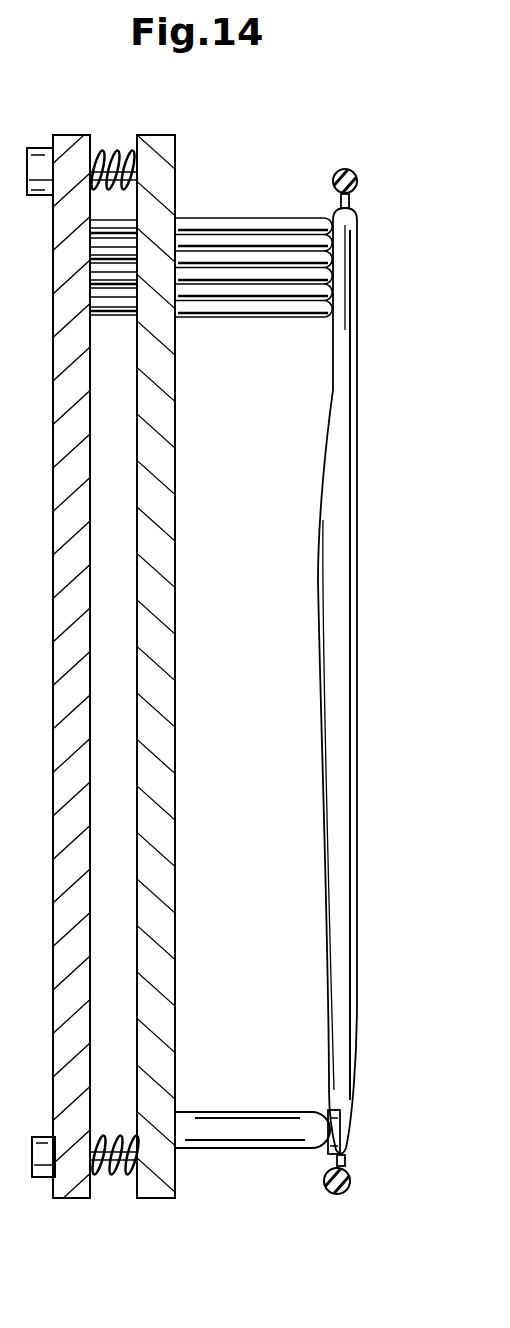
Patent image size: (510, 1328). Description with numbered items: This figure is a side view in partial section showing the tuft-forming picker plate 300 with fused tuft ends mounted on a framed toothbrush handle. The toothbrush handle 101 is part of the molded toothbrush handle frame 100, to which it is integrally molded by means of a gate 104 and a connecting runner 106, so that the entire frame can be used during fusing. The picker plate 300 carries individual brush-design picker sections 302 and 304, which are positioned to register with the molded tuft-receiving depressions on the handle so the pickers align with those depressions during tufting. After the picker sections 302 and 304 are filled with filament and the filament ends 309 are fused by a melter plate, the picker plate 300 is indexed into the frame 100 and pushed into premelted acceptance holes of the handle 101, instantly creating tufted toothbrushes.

The molded toothbrush handle frame 100 is at (350, 152).
The toothbrush handle 101 is at (358, 535).
The gate 104 is at (352, 200).
The connecting runner 106 is at (356, 174).
The picker plate 300 is at (176, 134).
The picker section 302 is at (240, 218).
The picker section 304 is at (213, 1112).
The filament ends 309 is at (328, 1112).